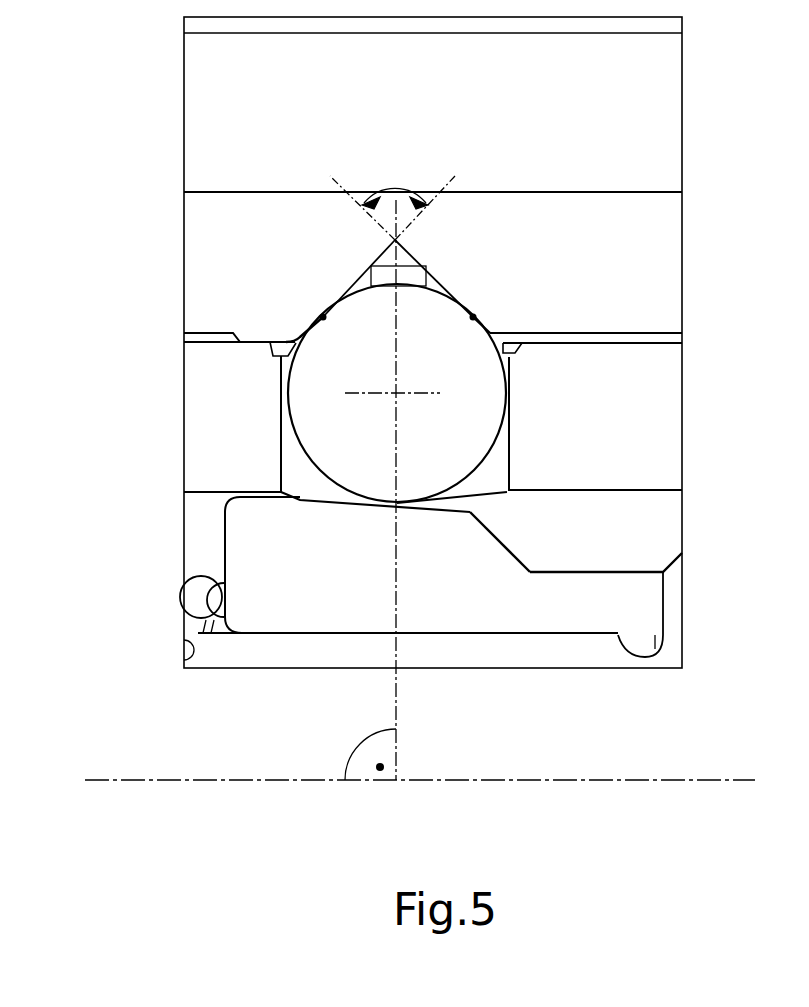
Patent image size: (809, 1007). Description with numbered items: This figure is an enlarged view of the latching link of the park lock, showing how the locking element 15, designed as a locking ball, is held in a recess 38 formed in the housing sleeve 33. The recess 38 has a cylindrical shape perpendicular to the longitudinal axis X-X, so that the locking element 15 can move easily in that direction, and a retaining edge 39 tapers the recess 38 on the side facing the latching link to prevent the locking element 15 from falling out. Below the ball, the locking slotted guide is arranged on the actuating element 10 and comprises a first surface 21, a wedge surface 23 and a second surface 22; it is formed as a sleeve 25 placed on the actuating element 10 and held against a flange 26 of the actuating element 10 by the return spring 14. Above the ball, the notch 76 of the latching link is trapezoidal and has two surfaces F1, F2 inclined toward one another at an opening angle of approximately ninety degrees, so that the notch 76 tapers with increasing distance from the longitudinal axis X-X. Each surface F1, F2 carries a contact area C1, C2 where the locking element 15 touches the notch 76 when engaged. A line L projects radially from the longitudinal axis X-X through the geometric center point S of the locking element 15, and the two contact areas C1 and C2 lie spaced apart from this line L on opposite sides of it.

The actuating element 10 is at (498, 650).
The return spring 14 is at (200, 597).
The locking element 15 is at (323, 400).
The first surface 21 is at (335, 500).
The second surface 22 is at (582, 573).
The wedge surface 23 is at (492, 532).
The sleeve 25 is at (297, 585).
The flange 26 is at (665, 588).
The housing sleeve 33 is at (623, 267).
The recess 38 is at (277, 345).
The retaining edge 39 is at (508, 340).
The notch 76 is at (327, 237).
The surface F1 is at (348, 285).
The surface F2 is at (460, 285).
The contact area C1 is at (323, 317).
The contact area C2 is at (473, 317).
The geometric center point S is at (396, 394).
The line L is at (398, 460).
The longitudinal axis X is at (421, 763).